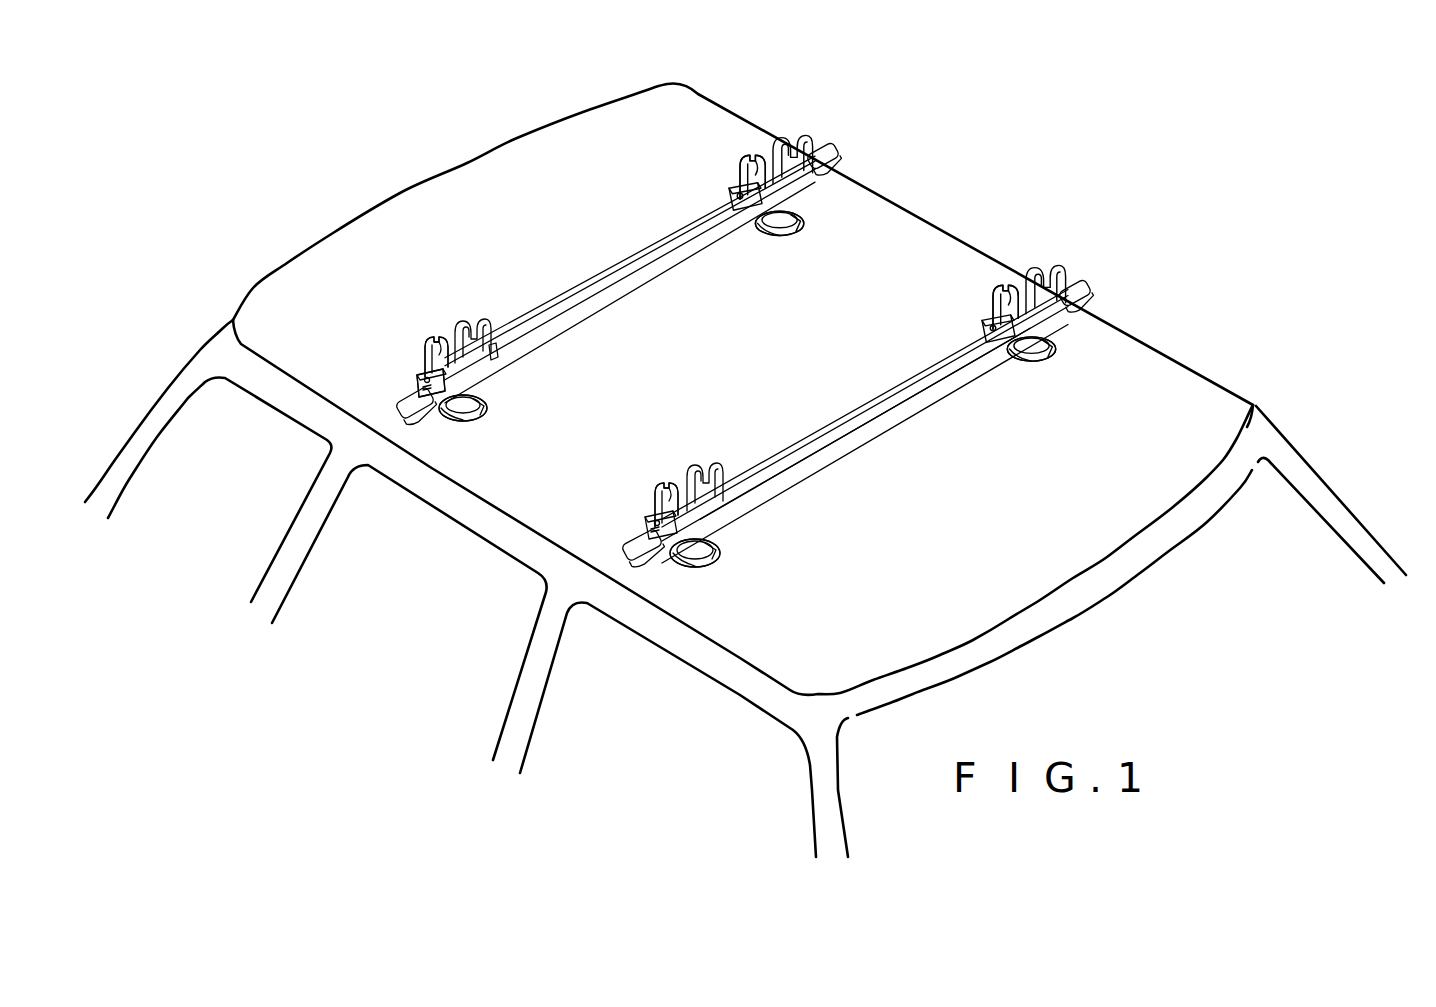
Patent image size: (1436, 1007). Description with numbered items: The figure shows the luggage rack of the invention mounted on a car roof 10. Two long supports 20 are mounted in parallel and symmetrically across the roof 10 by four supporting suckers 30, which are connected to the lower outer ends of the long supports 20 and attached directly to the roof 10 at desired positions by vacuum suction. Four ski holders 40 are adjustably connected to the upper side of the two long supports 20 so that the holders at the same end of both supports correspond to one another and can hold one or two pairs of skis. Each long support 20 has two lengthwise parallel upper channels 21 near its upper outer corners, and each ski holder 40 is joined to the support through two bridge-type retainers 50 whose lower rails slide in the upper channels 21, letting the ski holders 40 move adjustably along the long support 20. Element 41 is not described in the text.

The roof 10 is at (962, 245).
The long support 20 is at (648, 280).
The upper channel 21 is at (812, 447).
The supporting sucker 30 is at (722, 555).
The ski holder 40 is at (452, 327).
The clamp arm 41 is at (741, 169).
The bridge-type retainer 50 is at (418, 381).